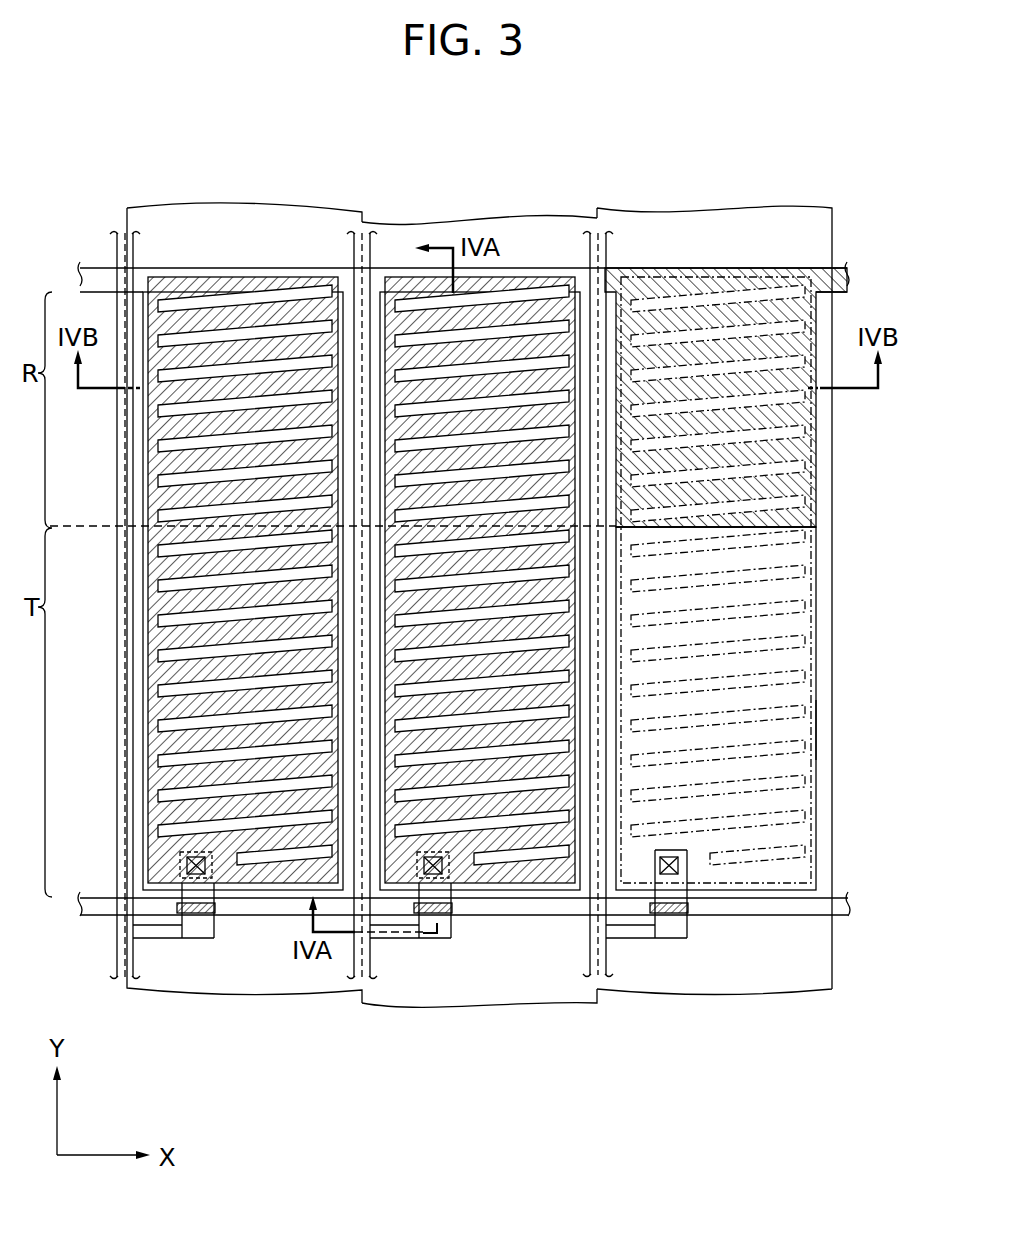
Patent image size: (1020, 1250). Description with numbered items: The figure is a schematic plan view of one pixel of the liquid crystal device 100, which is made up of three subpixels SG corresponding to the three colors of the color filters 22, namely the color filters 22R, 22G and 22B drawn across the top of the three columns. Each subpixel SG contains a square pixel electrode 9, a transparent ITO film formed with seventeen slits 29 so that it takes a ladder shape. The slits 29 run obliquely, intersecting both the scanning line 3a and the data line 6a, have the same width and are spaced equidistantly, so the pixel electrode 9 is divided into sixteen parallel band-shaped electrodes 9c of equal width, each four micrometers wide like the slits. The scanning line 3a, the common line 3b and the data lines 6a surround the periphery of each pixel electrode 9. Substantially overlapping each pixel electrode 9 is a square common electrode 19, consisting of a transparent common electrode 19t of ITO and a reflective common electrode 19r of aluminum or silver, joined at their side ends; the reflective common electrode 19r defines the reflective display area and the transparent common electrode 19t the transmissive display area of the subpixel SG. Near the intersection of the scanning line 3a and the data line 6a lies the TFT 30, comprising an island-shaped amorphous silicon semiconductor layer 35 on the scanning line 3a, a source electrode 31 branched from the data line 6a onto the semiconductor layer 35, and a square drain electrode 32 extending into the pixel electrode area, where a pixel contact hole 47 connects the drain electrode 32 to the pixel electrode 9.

The liquid crystal device 100 is at (520, 549).
The color filters 22 is at (479, 549).
The color filter 22B is at (300, 225).
The color filter 22G is at (519, 225).
The color filter 22R is at (714, 564).
The scanning line 3a is at (558, 914).
The common line 3b is at (96, 275).
The data line 6a is at (134, 250).
The pixel electrode 9 is at (471, 553).
The band-shaped electrodes 9c is at (175, 638).
The slits 29 is at (160, 728).
The common electrode 19 is at (491, 579).
The reflective common electrode 19r is at (143, 430).
The transparent common electrode 19t is at (143, 607).
The TFT 30 is at (392, 922).
The source electrode 31 is at (203, 937).
The drain electrode 32 is at (214, 893).
The semiconductor layer 35 is at (182, 918).
The pixel contact hole 47 is at (207, 866).
The subpixel SG is at (812, 730).